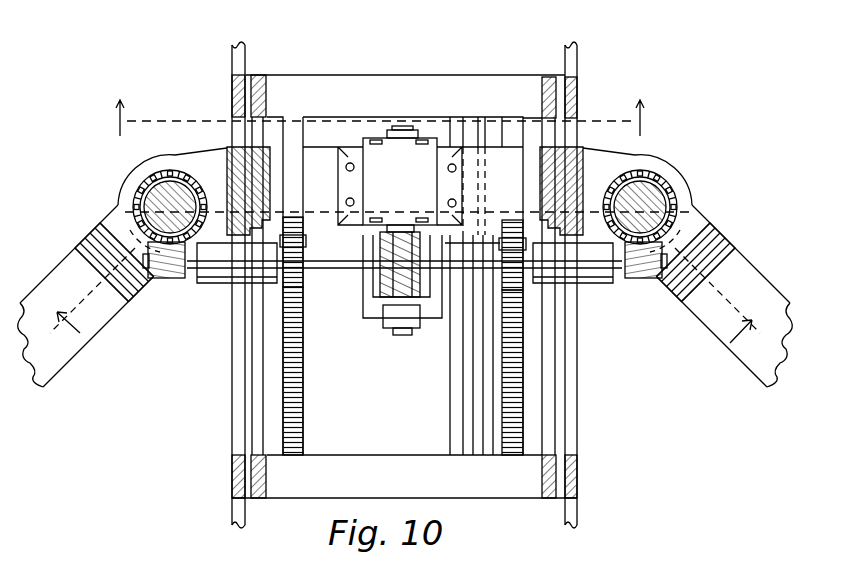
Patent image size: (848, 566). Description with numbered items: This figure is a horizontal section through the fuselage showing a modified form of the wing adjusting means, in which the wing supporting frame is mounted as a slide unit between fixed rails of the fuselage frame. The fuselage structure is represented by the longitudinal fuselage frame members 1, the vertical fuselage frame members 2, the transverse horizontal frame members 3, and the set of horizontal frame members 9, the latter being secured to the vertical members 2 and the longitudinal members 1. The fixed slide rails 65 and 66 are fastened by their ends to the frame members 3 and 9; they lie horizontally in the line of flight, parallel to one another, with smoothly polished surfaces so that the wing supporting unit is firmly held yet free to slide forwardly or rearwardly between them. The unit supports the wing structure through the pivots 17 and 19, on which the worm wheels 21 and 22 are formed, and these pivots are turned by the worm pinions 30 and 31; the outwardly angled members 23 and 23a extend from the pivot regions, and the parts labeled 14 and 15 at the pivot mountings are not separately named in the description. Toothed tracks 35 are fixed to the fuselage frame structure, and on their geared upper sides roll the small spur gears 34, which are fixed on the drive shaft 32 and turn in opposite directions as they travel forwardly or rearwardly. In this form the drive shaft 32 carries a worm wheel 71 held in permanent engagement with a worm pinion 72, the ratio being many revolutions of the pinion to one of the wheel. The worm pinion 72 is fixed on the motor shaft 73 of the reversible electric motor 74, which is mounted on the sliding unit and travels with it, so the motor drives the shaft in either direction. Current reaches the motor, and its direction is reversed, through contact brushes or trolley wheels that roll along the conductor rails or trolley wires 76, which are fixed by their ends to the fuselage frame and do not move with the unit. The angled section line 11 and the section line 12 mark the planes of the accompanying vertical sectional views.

The longitudinal fuselage frame member 1 is at (232, 367).
The vertical fuselage frame member 2 is at (232, 95).
The horizontal frame member 3 is at (434, 76).
The horizontal fuselage frame member 9 is at (356, 455).
The angled section line 11 is at (408, 327).
The section line 12 is at (381, 120).
The left bearing housing 14 is at (236, 158).
The right bearing housing 15 is at (583, 174).
The pivot 17 is at (166, 205).
The pivot 19 is at (664, 203).
The worm wheel 21 is at (132, 201).
The worm wheel 22 is at (666, 190).
The left swing arm 23 is at (58, 372).
The right swing arm 23a is at (752, 276).
The worm pinion 30 is at (180, 280).
The worm pinion 31 is at (648, 283).
The drive shaft 32 is at (352, 270).
The spur gear 34 is at (291, 303).
The toothed track 35 is at (305, 410).
The slide rail 65 is at (262, 394).
The slide rail 66 is at (553, 431).
The worm wheel 71 is at (383, 284).
The worm pinion 72 is at (427, 312).
The motor shaft 73 is at (405, 128).
The reversible motor 74 is at (400, 181).
The conductor rail 76 is at (490, 402).